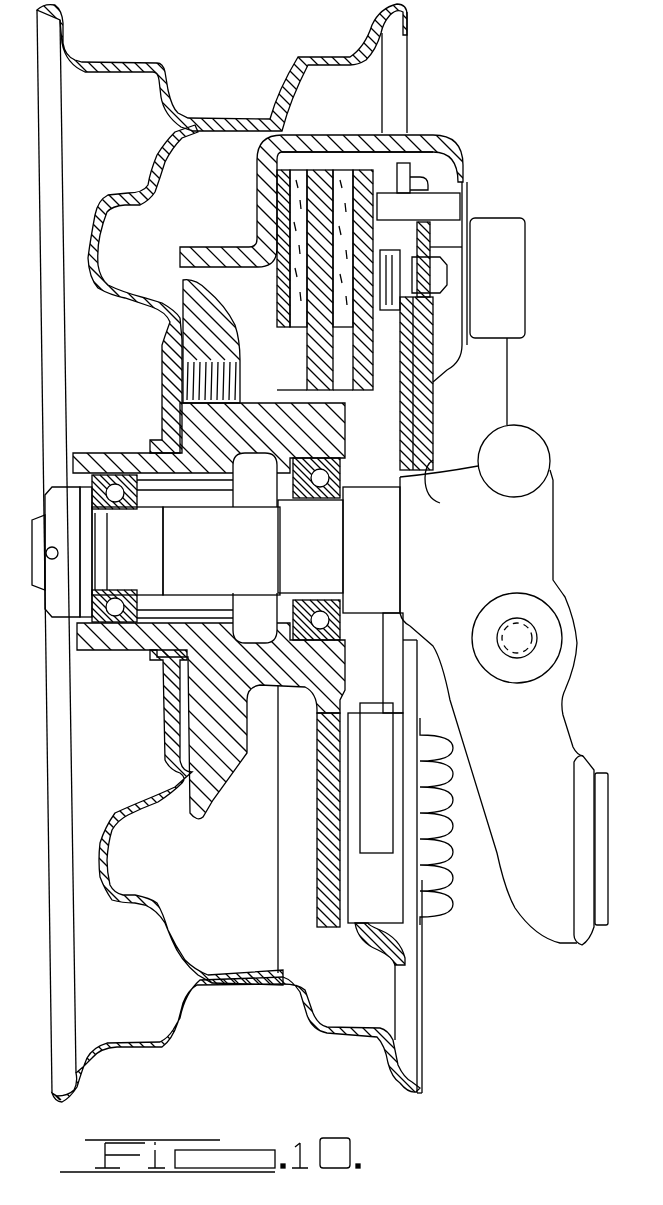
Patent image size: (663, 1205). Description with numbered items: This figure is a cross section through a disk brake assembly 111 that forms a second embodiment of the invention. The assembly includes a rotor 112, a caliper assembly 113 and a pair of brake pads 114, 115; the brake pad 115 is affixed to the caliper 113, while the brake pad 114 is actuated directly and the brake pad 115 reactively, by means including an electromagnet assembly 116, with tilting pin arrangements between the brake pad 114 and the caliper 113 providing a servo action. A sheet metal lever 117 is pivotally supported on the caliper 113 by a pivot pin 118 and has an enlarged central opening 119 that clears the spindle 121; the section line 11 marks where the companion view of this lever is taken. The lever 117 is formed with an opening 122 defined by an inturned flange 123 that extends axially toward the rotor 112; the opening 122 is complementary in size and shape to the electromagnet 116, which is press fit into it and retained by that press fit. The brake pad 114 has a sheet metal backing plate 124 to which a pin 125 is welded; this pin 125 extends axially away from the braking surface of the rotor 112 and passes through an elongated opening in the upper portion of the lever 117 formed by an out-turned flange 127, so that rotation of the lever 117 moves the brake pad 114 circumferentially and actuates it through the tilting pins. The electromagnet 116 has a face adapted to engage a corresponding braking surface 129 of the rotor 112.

The section line 11- 11 is at (358, 153).
The disk brake assembly 111 is at (537, 333).
The rotor 112 is at (315, 827).
The caliper assembly 113 is at (468, 150).
The brake pad 114 is at (381, 178).
The brake pad 115 is at (270, 195).
The electromagnet assembly 116 is at (425, 912).
The sheet metal lever 117 is at (430, 408).
The pivot pin 118 is at (430, 247).
The enlarged central opening 119 is at (452, 491).
The spindle 121 is at (483, 572).
The opening 122 is at (378, 921).
The inturned flange 123 is at (360, 942).
The sheet metal backing plate 124 is at (368, 157).
The pin 125 is at (465, 207).
The out-turned flange 127 is at (430, 180).
The rotor braking surface 129 is at (345, 877).